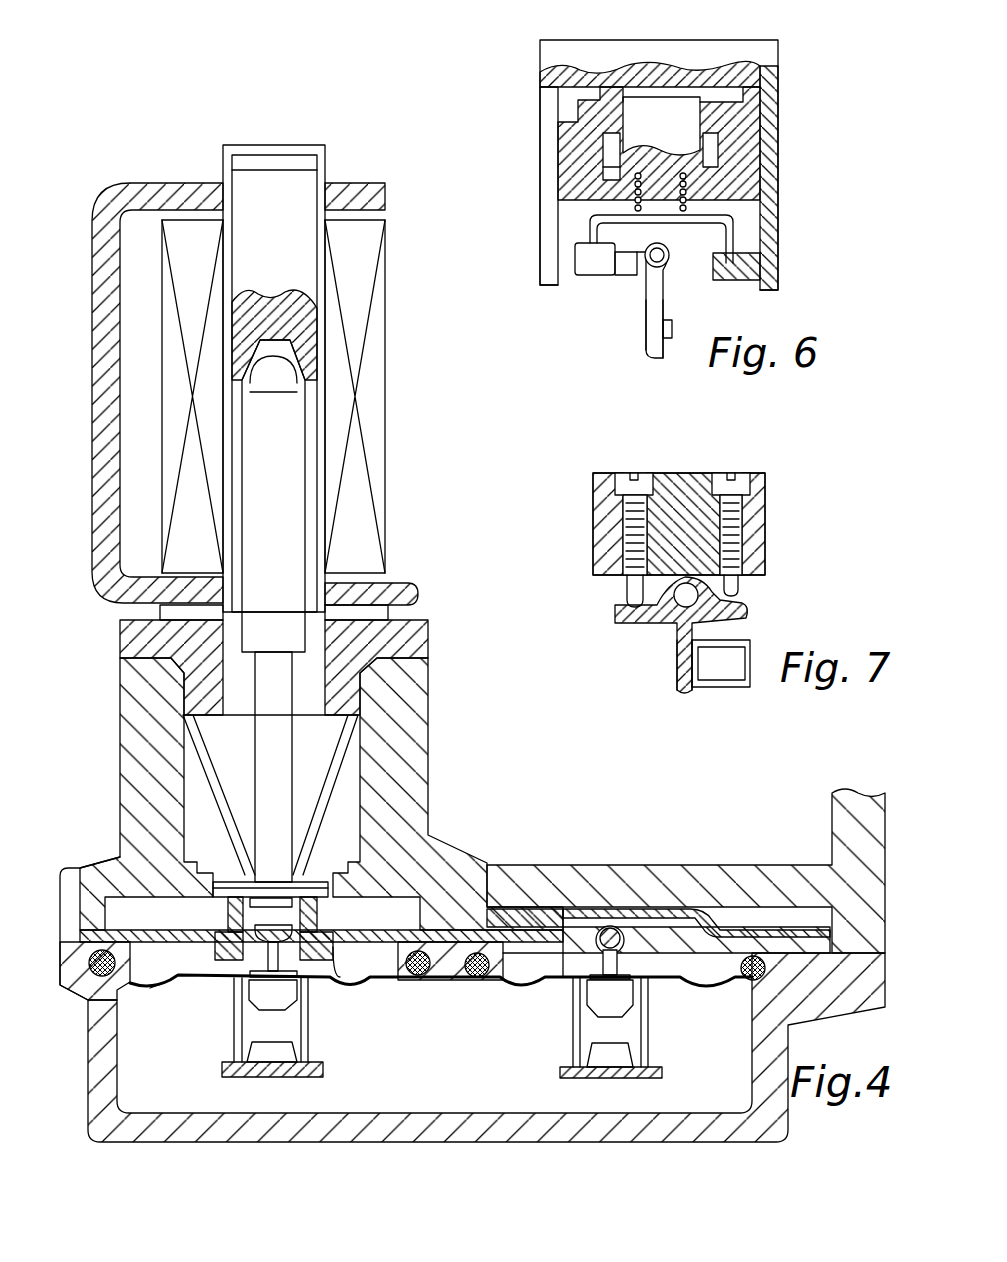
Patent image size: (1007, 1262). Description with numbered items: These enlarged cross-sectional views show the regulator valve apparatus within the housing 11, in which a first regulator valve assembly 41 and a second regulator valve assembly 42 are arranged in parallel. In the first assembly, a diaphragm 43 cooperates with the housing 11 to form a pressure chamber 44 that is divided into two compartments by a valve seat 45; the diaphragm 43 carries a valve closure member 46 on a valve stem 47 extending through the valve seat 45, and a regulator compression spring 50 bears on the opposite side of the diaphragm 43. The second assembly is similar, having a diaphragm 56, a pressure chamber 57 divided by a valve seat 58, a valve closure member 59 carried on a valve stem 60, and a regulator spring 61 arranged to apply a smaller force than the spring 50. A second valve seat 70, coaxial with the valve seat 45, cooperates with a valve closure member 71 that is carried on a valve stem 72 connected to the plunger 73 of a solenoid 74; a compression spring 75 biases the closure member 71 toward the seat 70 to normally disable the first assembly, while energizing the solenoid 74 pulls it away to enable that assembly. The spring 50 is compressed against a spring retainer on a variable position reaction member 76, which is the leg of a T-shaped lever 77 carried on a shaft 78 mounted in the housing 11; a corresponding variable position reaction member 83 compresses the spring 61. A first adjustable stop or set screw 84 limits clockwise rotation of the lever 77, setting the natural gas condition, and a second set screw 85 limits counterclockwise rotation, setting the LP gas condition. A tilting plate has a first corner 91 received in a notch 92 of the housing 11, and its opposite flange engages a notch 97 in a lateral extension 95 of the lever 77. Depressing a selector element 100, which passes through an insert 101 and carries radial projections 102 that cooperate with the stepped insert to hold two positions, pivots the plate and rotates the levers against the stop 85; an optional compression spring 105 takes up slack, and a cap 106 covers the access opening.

In FIG. 4, the housing 11 is at (105, 858).
In FIG. 6, the housing 11 is at (540, 147).
In FIG. 7, the housing 11 is at (766, 506).
In FIG. 4, the first regulator valve assembly 41 is at (52, 912).
In FIG. 4, the second regulator valve assembly 42 is at (660, 862).
In FIG. 4, the diaphragm 43 is at (373, 993).
In FIG. 4, the pressure chamber 44 is at (175, 983).
In FIG. 4, the valve seat 45 is at (245, 958).
In FIG. 4, the valve closure member 46 is at (300, 900).
In FIG. 4, the valve stem 47 is at (250, 962).
In FIG. 4, the regulator compression spring 50 is at (310, 1040).
In FIG. 7, the regulator compression spring 50 is at (712, 684).
In FIG. 4, the diaphragm 56 is at (660, 985).
In FIG. 4, the pressure chamber 57 is at (550, 960).
In FIG. 4, the valve seat 58 is at (712, 937).
In FIG. 4, the valve closure member 59 is at (608, 928).
In FIG. 4, the valve stem 60 is at (565, 982).
In FIG. 4, the regulator spring 61 is at (650, 1032).
In FIG. 4, the second valve seat 70 is at (335, 887).
In FIG. 4, the valve closure member 71 is at (296, 742).
In FIG. 4, the valve stem 72 is at (360, 700).
In FIG. 4, the plunger 73 is at (392, 652).
In FIG. 4, the solenoid 74 is at (392, 415).
In FIG. 4, the compression spring 75 is at (385, 752).
In FIG. 4, the variable position reaction member 76 is at (270, 1078).
In FIG. 6, the variable position reaction member 76 is at (650, 344).
In FIG. 7, the variable position reaction member 76 is at (673, 661).
In FIG. 6, the T-shaped lever 77 is at (641, 286).
In FIG. 7, the T-shaped lever 77 is at (658, 629).
In FIG. 6, the shaft 78 is at (673, 268).
In FIG. 7, the shaft 78 is at (720, 603).
In FIG. 4, the variable position reaction member 83 is at (620, 1077).
In FIG. 7, the first adjustable stop or set screw 84 is at (621, 538).
In FIG. 7, the second adjustable stop or set screw 85 is at (755, 533).
In FIG. 6, the first corner 91 is at (737, 244).
In FIG. 6, the notch 92 is at (765, 270).
In FIG. 6, the lateral extension 95 is at (587, 281).
In FIG. 6, the notch 97 is at (580, 239).
In FIG. 6, the selector element 100 is at (643, 92).
In FIG. 6, the insert 101 is at (779, 100).
In FIG. 6, the radial projections 102 is at (565, 175).
In FIG. 6, the compression spring 105 is at (752, 196).
In FIG. 6, the cap 106 is at (779, 56).